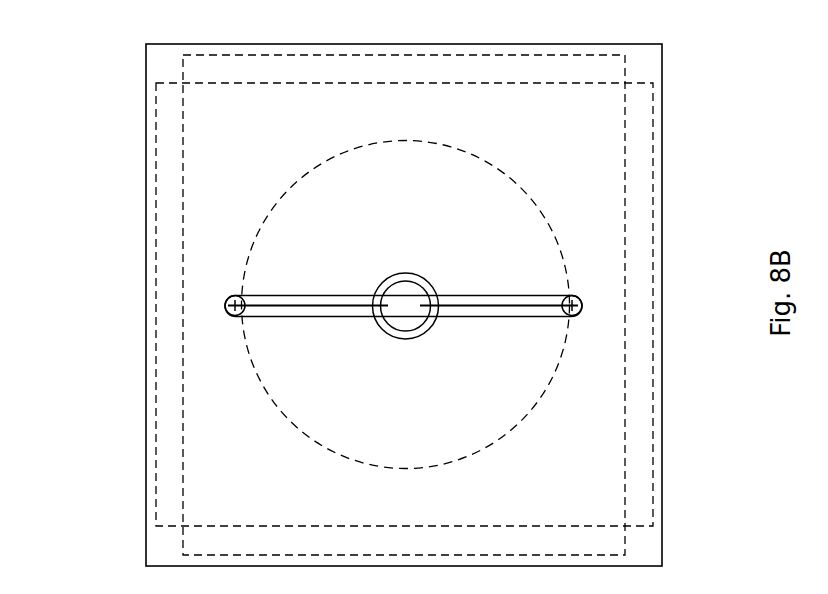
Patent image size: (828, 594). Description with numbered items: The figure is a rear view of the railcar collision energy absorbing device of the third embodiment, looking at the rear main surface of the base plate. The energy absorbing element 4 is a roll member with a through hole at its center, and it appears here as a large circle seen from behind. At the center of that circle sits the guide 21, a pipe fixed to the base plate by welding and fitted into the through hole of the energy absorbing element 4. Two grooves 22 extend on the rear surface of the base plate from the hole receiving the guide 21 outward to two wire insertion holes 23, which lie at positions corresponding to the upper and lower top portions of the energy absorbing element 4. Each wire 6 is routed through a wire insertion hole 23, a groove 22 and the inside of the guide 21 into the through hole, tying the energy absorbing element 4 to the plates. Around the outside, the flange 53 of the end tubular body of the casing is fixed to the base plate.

The energy absorbing element 4 is at (530, 413).
The wire 6 is at (286, 302).
The guide 21 is at (423, 283).
The groove 22 is at (307, 317).
The wire insertion hole 23 is at (224, 302).
The flange 53 is at (203, 70).